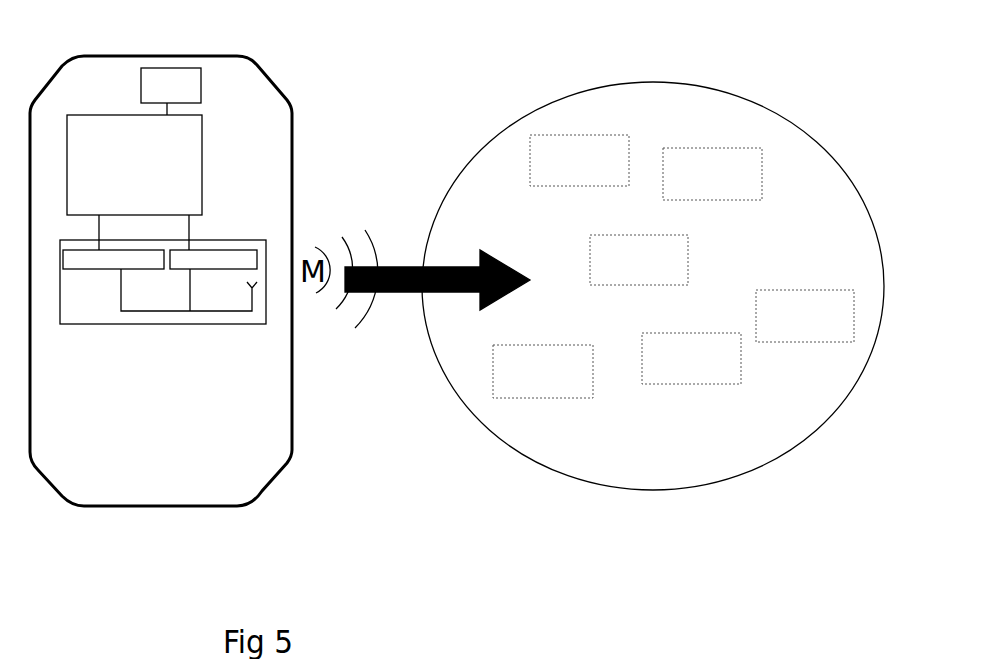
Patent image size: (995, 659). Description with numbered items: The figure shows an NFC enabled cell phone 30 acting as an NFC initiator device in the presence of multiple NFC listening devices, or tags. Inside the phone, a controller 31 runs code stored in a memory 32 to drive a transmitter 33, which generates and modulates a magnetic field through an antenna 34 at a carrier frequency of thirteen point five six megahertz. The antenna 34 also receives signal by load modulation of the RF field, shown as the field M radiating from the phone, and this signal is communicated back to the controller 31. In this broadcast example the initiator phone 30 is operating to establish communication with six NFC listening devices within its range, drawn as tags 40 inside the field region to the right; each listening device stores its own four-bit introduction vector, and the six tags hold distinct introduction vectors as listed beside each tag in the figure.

The NFC enabled cell phone 30 is at (262, 492).
The controller 31 is at (201, 172).
The memory 32 is at (201, 83).
The transmitter 33 is at (85, 269).
The antenna 34 is at (253, 297).
The RFID tags 40 is at (578, 135).